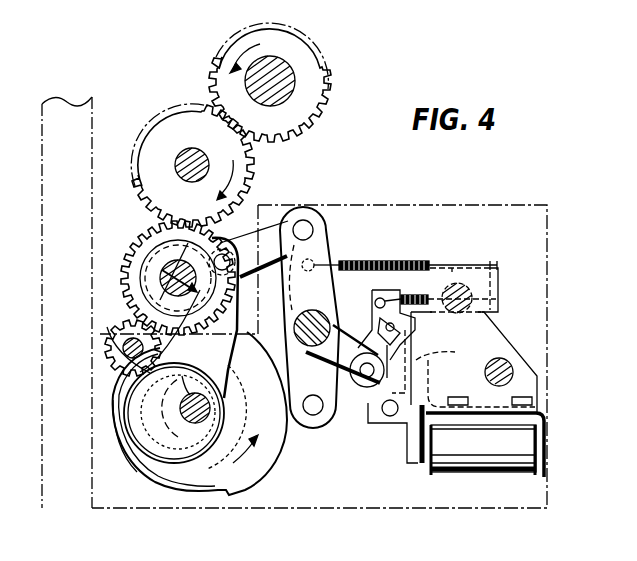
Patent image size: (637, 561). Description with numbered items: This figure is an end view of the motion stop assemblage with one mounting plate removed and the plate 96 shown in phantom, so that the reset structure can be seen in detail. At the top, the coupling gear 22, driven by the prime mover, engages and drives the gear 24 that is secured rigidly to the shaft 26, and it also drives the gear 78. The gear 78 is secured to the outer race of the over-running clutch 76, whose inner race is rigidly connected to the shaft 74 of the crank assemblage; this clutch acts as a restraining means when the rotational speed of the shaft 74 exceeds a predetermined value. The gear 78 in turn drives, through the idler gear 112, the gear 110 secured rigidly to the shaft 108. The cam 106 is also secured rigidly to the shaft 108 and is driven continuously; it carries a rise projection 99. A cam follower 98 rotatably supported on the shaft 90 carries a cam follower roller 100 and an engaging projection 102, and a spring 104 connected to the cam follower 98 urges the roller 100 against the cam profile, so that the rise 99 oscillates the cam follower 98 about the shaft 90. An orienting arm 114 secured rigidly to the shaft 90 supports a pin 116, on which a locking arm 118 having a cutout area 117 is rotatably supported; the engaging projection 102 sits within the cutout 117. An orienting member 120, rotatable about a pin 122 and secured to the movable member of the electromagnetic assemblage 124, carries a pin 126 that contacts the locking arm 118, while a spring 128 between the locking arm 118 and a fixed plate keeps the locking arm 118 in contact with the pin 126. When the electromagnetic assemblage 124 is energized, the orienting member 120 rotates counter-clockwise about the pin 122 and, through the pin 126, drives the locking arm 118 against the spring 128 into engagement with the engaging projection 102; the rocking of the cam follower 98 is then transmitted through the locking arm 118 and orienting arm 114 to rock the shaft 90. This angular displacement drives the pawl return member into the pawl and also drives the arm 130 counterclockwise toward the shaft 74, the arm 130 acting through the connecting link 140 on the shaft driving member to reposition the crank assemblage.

The coupling gear 22 is at (254, 167).
The gear 24 is at (312, 113).
The shaft 26 is at (272, 107).
The shaft 74 is at (162, 270).
The over-running clutch 76 is at (148, 230).
The gear 78 is at (120, 278).
The shaft 90 is at (309, 317).
The plate 96 is at (395, 512).
The cam follower 98 is at (298, 370).
The rise projection 99 is at (245, 487).
The cam follower roller 100 is at (318, 428).
The engaging projection 102 is at (377, 333).
The spring 104 is at (366, 261).
The cam 106 is at (162, 488).
The shaft 108 is at (182, 376).
The gear 110 is at (212, 455).
The idler gear 112 is at (122, 336).
The orienting arm 114 is at (334, 273).
The pin 116 is at (361, 384).
The cutout area 117 is at (343, 354).
The locking arm 118 is at (405, 263).
The orienting member 120 is at (432, 357).
The pin 122 is at (391, 417).
The electromagnetic assemblage 124 is at (470, 470).
The pin 126 is at (440, 288).
The spring 128 is at (441, 270).
The arm 130 is at (326, 246).
The connecting link 140 is at (283, 216).